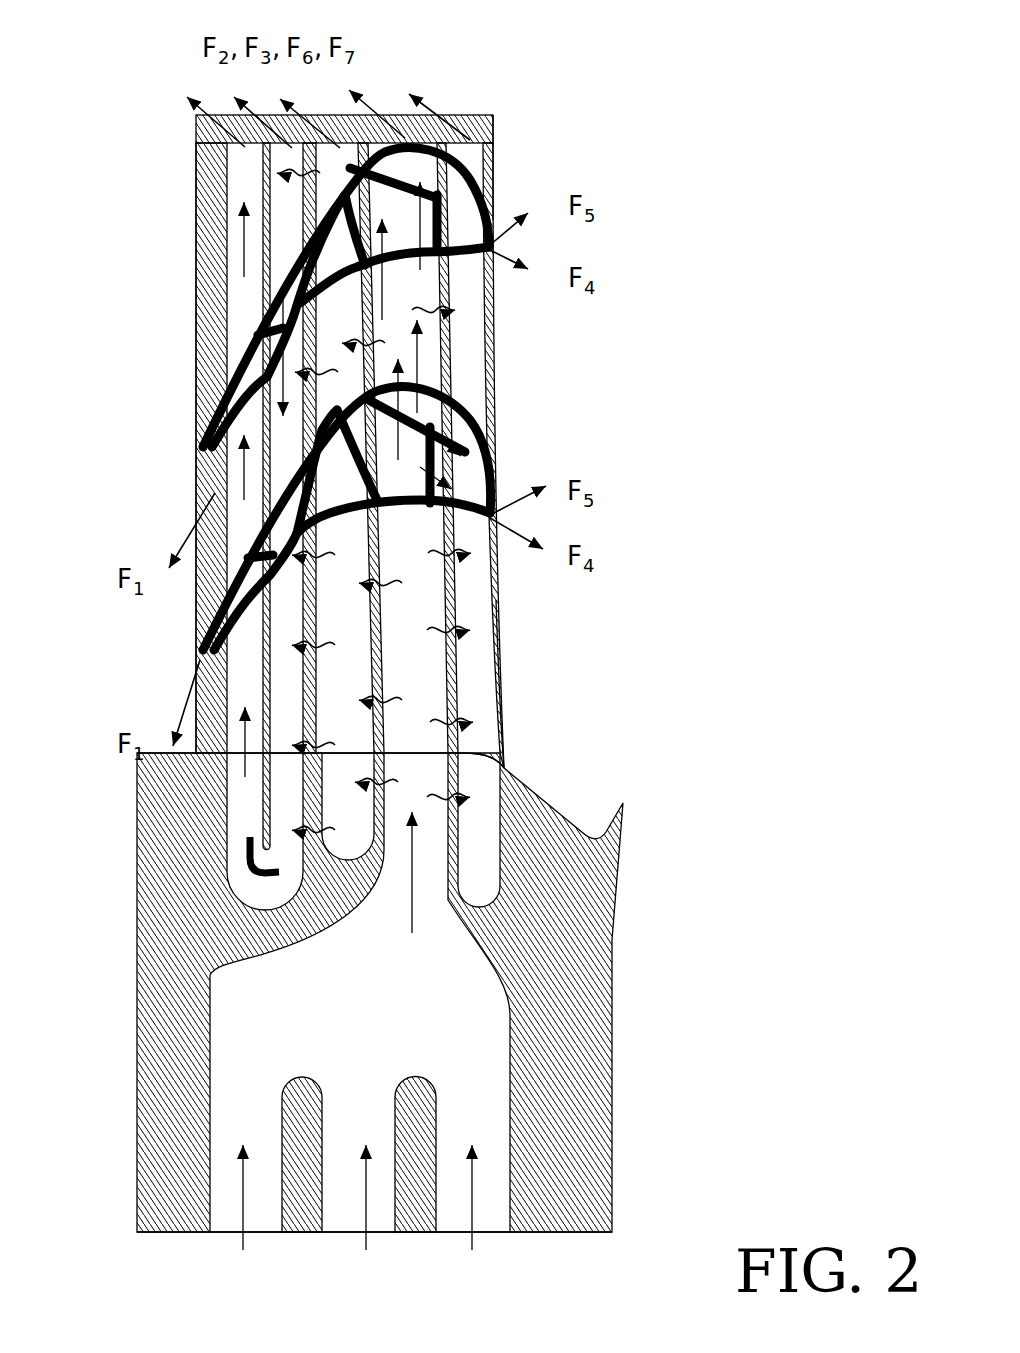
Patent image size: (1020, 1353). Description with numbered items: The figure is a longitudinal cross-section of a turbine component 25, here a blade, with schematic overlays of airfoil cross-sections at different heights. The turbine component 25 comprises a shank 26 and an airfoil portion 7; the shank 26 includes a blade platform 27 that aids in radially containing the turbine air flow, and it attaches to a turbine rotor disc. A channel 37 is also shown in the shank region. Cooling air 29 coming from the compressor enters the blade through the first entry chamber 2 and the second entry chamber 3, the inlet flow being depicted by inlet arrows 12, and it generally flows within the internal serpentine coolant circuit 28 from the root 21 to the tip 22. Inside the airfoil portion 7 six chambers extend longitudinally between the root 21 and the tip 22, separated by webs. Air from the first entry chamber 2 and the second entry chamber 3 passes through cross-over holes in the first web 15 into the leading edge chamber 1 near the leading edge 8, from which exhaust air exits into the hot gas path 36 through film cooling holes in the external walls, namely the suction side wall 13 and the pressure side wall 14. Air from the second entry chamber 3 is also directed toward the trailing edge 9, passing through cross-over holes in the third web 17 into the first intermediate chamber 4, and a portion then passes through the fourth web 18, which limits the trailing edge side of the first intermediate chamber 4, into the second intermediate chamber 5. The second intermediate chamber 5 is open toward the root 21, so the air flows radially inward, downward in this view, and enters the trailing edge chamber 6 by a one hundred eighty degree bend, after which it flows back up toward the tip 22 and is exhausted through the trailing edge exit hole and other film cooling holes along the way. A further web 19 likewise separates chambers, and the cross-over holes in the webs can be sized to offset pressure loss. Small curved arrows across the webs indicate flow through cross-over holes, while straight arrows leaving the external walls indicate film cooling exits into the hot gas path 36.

The leading edge chamber 1 is at (484, 713).
The first entry chamber 2 is at (430, 309).
The second entry chamber 3 is at (425, 787).
The first intermediate chamber 4 is at (359, 838).
The second intermediate chamber 5 is at (299, 800).
The trailing edge chamber 6 is at (248, 803).
The airfoil portion 7 is at (211, 449).
The leading edge 8 is at (498, 390).
The trailing edge 9 is at (194, 352).
The inlet arrows 12 is at (419, 890).
The suction side wall 13 is at (147, 448).
The pressure side wall 14 is at (214, 240).
The first web 15 is at (440, 375).
The third web 17 is at (362, 307).
The fourth web 18 is at (310, 198).
The web 19 is at (265, 272).
The root 21 is at (516, 727).
The tip 22 is at (490, 116).
The turbine component 25 is at (336, 425).
The shank 26 is at (158, 1022).
The blade platform 27 is at (152, 768).
The coolant circuit 28 is at (430, 632).
The cooling air 29 is at (357, 1229).
The hot gas path 36 is at (481, 89).
The channel 37 is at (272, 888).